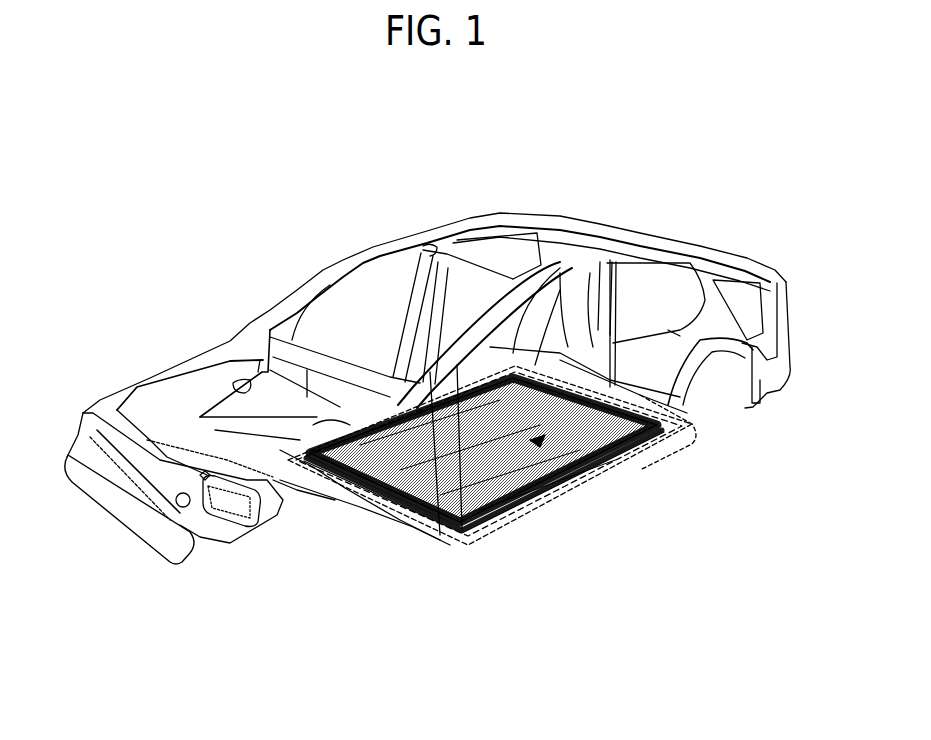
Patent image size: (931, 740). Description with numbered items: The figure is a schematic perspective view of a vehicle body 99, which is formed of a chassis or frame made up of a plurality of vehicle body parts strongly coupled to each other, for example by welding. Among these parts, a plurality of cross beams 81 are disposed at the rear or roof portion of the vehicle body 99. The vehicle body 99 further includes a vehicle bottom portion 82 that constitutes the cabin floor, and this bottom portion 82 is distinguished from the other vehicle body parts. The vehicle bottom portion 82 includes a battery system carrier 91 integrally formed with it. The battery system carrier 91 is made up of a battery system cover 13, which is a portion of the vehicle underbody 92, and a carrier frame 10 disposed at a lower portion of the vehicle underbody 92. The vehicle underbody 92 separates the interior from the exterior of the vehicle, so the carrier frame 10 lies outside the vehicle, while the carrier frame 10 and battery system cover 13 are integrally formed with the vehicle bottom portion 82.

The vehicle body 99 is at (474, 150).
The cross beams 81 is at (428, 250).
The vehicle bottom portion 82 is at (700, 440).
The vehicle underbody 92 is at (606, 462).
The battery system cover 13 is at (545, 478).
The carrier frame 10 is at (462, 522).
The battery system carrier 91 is at (623, 532).